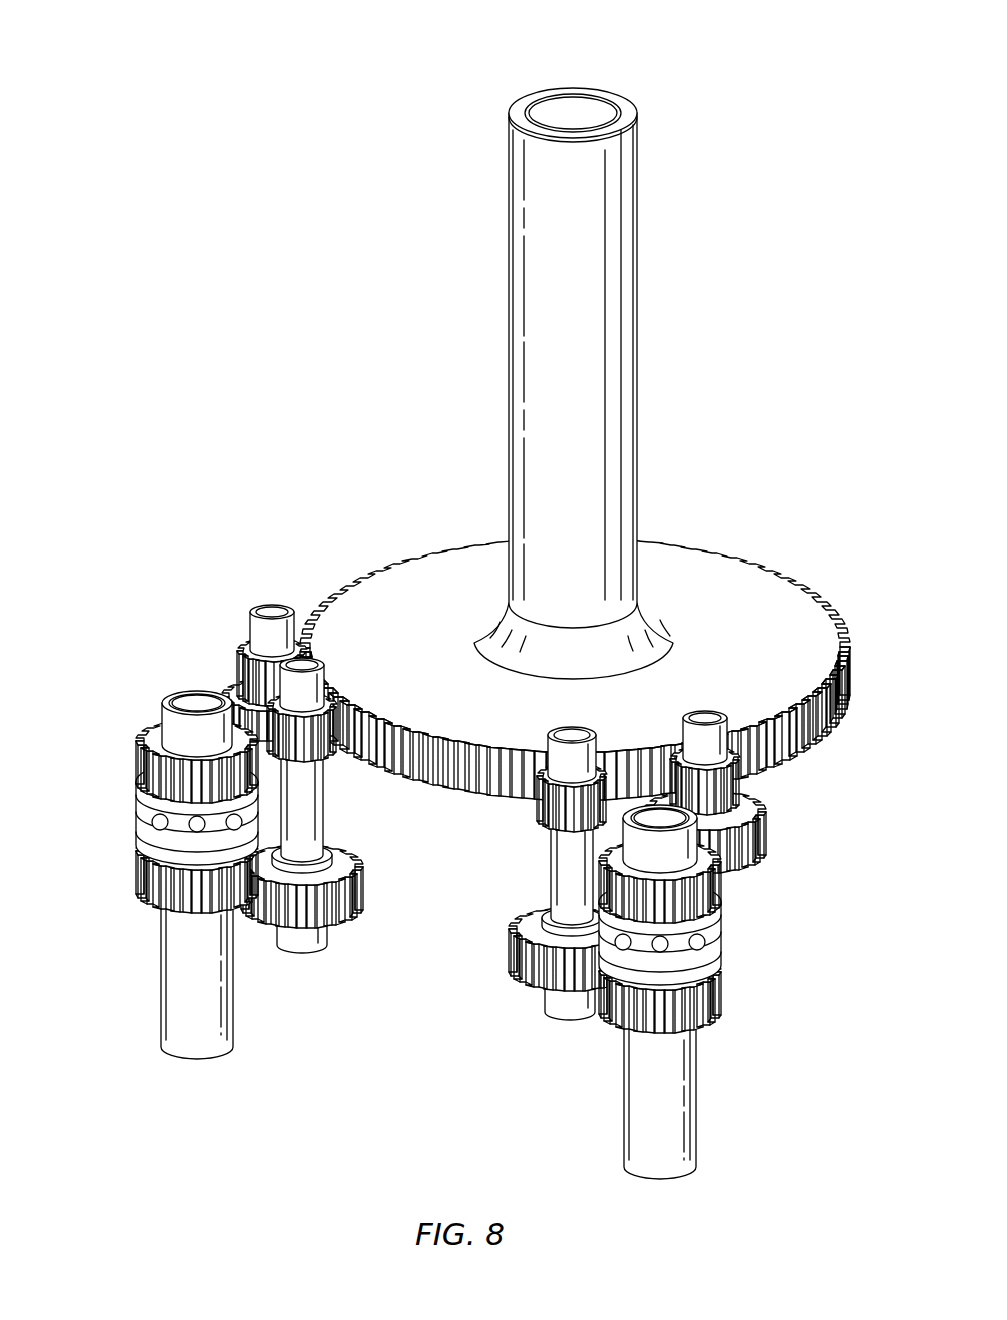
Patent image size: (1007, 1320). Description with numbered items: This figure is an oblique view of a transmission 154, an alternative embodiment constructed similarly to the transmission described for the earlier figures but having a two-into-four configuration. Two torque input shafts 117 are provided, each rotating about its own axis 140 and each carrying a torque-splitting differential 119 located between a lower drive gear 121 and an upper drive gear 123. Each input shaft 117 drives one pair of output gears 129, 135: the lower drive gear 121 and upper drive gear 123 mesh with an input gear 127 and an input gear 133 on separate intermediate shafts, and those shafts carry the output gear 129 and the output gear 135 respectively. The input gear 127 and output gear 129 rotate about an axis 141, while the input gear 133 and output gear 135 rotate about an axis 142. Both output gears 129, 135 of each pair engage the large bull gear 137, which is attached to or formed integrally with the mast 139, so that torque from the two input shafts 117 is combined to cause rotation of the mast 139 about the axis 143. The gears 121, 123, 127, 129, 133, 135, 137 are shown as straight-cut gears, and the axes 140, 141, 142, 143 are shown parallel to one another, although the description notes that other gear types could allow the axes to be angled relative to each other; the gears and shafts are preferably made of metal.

The input shaft 117 is at (697, 1090).
The torque-splitting differential mechanism 119 is at (738, 935).
The lower drive gear 121 is at (721, 980).
The upper drive gear 123 is at (721, 882).
The input gear 127 is at (512, 949).
The output gear 129 is at (542, 806).
The input gear 133 is at (768, 835).
The output gear 135 is at (740, 765).
The bull gear 137 is at (424, 564).
The mast 139 is at (637, 352).
The axis 140 is at (660, 1183).
The axis 141 is at (572, 1020).
The axis 142 is at (705, 718).
The axis 143 is at (572, 702).
The transmission 154 is at (355, 222).